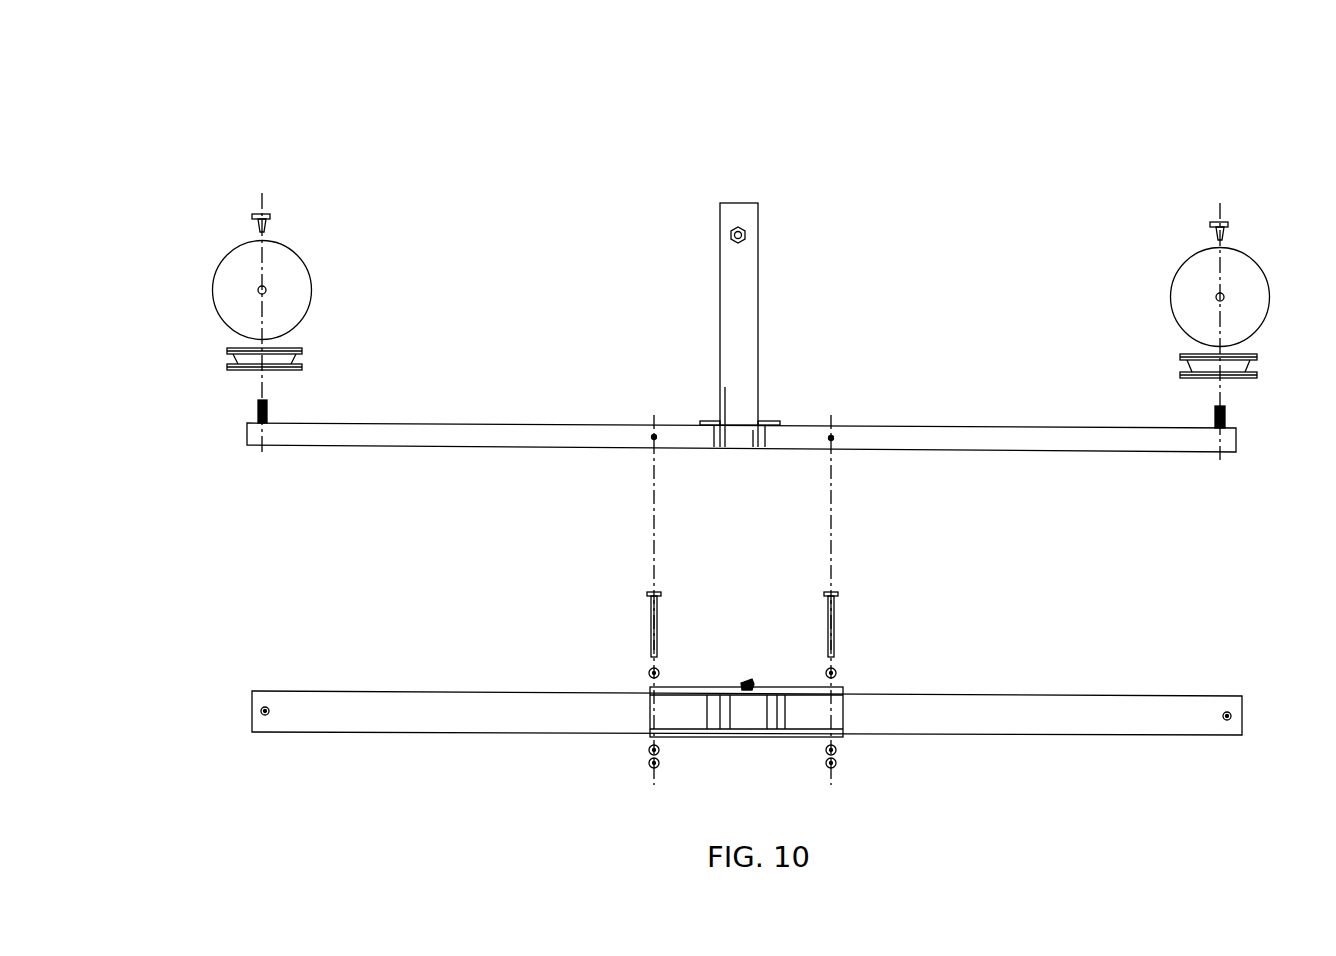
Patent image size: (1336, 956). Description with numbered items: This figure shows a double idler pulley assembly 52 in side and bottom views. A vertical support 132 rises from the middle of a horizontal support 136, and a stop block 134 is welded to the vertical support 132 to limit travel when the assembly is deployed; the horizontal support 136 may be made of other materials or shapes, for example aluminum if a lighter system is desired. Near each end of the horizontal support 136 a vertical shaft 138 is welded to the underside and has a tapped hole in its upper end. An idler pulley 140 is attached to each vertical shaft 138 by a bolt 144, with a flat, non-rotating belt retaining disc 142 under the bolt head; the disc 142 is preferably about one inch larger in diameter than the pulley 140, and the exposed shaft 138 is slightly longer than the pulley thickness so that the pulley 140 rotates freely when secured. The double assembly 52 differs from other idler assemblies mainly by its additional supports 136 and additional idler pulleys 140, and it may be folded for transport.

The double idler pulley assembly 52 is at (972, 137).
The vertical support 132 is at (745, 320).
The stop block 134 is at (705, 421).
The horizontal support 136 is at (400, 425).
The vertical shaft 138 is at (268, 410).
The idler pulley 140 is at (300, 362).
The belt retaining disc 142 is at (310, 275).
The bolt 144 is at (265, 214).